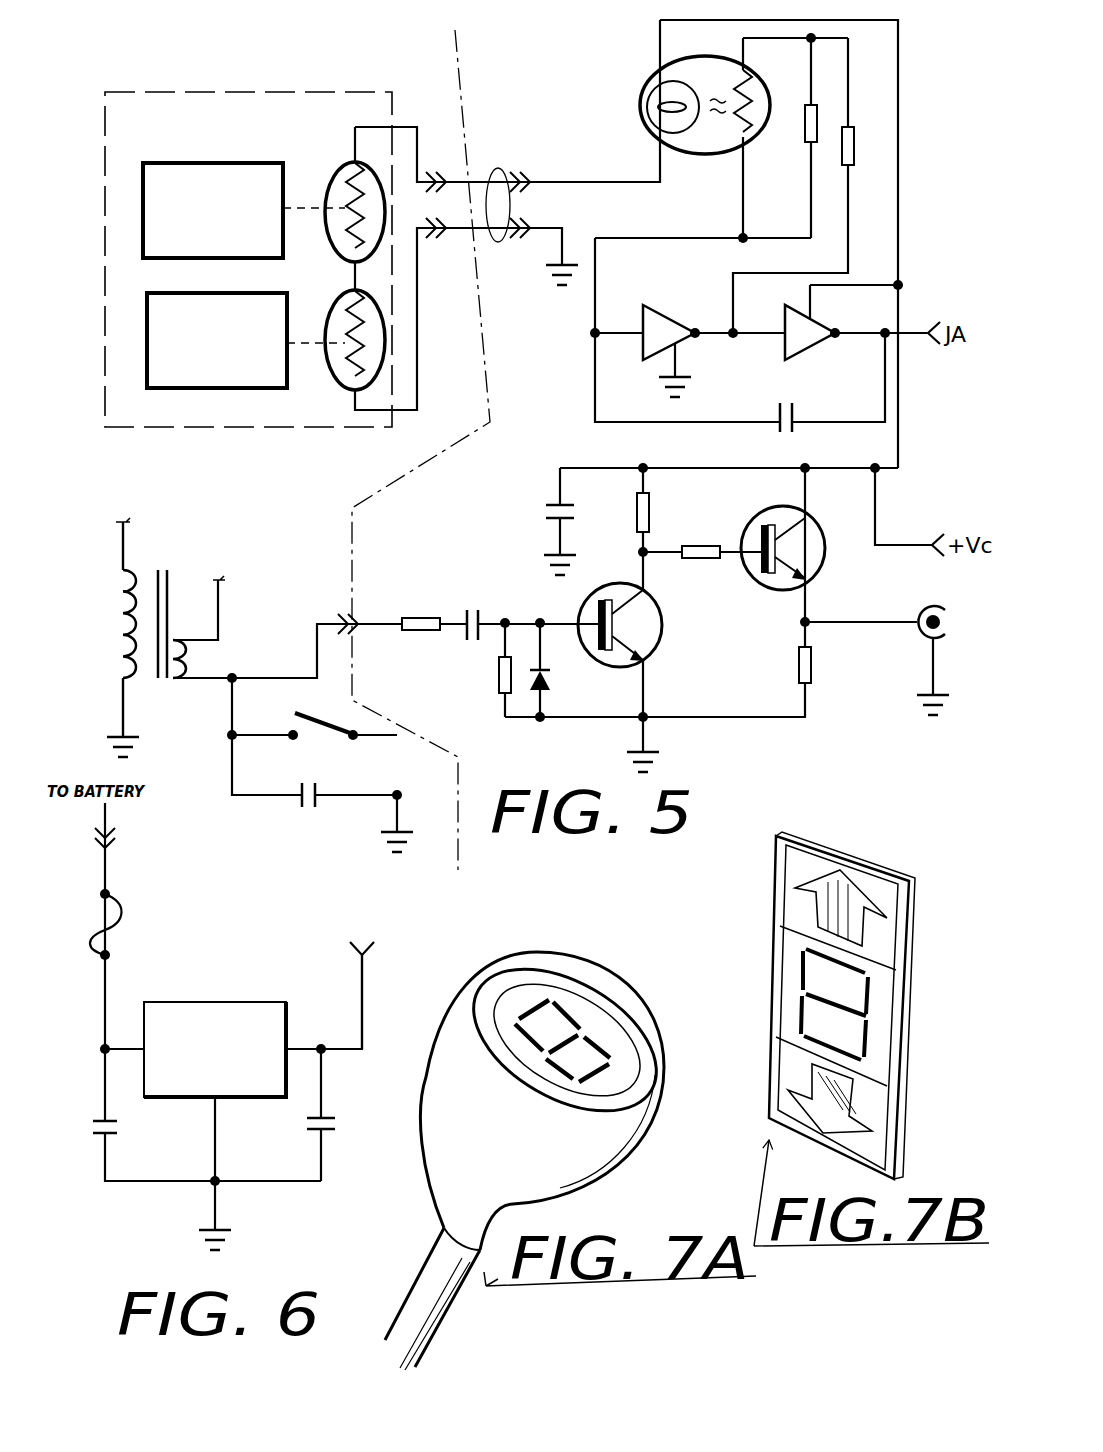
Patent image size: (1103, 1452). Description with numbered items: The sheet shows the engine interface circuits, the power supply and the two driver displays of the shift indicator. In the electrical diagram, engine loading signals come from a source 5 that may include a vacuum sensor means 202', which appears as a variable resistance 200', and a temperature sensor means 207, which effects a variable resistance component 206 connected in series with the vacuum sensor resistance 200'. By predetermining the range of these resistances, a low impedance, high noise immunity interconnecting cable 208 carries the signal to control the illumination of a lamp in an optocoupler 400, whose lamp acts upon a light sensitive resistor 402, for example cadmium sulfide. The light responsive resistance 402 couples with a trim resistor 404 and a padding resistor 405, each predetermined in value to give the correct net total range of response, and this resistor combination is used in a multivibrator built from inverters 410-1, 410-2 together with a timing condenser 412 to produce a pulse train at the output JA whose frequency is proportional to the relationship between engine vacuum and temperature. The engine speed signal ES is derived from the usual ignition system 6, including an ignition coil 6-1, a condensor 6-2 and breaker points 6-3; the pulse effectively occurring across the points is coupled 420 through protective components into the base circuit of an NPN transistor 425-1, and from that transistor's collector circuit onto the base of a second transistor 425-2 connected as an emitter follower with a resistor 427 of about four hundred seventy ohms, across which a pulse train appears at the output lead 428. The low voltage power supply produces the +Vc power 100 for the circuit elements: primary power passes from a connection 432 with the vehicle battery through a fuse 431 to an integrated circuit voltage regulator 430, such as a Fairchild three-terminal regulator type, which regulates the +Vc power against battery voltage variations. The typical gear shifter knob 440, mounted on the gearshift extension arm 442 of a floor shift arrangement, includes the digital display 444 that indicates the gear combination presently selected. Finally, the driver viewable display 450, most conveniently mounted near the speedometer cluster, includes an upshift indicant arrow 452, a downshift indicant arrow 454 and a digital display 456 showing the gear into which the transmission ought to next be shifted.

In FIG. 5, the engine loading signal source 5 is at (175, 88).
In FIG. 5, the variable resistance 200' is at (334, 201).
In FIG. 5, the vacuum sensor means 202' is at (239, 223).
In FIG. 5, the variable resistance component 206 is at (341, 358).
In FIG. 5, the temperature sensor means 207 is at (198, 388).
In FIG. 5, the interconnecting cable 208 is at (508, 177).
In FIG. 5, the optocoupler 400 is at (640, 92).
In FIG. 5, the light sensitive resistor 402 is at (795, 65).
In FIG. 5, the trim resistor 404 is at (872, 106).
In FIG. 5, the padding resistor 405 is at (804, 125).
In FIG. 5, the inverter 410-1 is at (664, 328).
In FIG. 5, the inverter 410-2 is at (811, 329).
In FIG. 5, the timing condenser 412 is at (778, 409).
In FIG. 5, the coupling 420 is at (358, 620).
In FIG. 5, the NPN transistor 425-1 is at (650, 623).
In FIG. 5, the transistor 425-2 is at (766, 540).
In FIG. 5, the resistor 427 is at (798, 668).
In FIG. 5, the output lead 428 is at (858, 620).
In FIG. 5, the ignition system 6 is at (247, 540).
In FIG. 5, the ignition coil 6-1 is at (169, 582).
In FIG. 5, the condensor 6-2 is at (301, 792).
In FIG. 5, the breaker points 6-3 is at (336, 716).
In FIG. 6, the connection 432 is at (116, 848).
In FIG. 6, the fuse 431 is at (112, 926).
In FIG. 6, the integrated circuit voltage regulator 430 is at (186, 1003).
In FIG. 6, the +Vc power 100 is at (362, 1008).
In FIG. 7A, the gear shifter knob 440 is at (646, 1148).
In FIG. 7A, the gearshift extension arm 442 is at (412, 1302).
In FIG. 7A, the digital display 444 is at (578, 1000).
In FIG. 7B, the driver viewable display 450 is at (893, 855).
In FIG. 7B, the upshift indicant arrow 452 is at (806, 885).
In FIG. 7B, the downshift indicant arrow 454 is at (812, 1090).
In FIG. 7B, the digital display 456 is at (797, 1000).